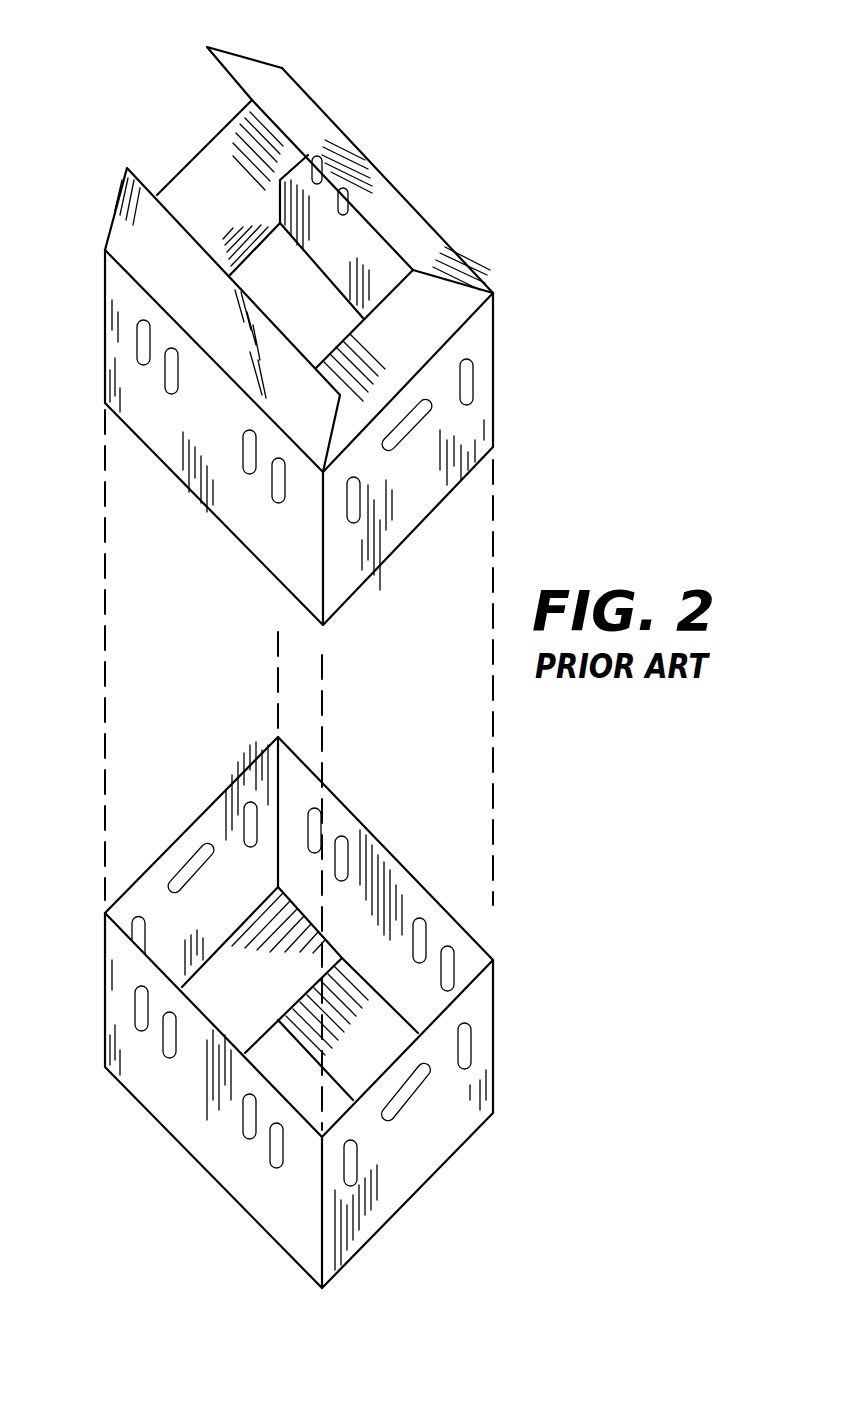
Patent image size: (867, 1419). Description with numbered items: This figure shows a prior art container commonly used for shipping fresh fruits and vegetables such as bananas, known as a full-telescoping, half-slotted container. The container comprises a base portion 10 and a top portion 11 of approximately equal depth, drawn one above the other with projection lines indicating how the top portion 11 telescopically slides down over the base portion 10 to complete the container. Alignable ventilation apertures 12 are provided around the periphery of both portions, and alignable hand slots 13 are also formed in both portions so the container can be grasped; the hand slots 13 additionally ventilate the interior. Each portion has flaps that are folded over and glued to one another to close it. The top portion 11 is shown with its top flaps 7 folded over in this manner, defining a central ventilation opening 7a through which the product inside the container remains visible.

The top flaps 7 is at (388, 208).
The central ventilation opening 7a is at (321, 270).
The base portion 10 is at (472, 1105).
The top portion 11 is at (480, 428).
The ventilation apertures 12 is at (465, 382).
The hand slots 13 is at (392, 442).